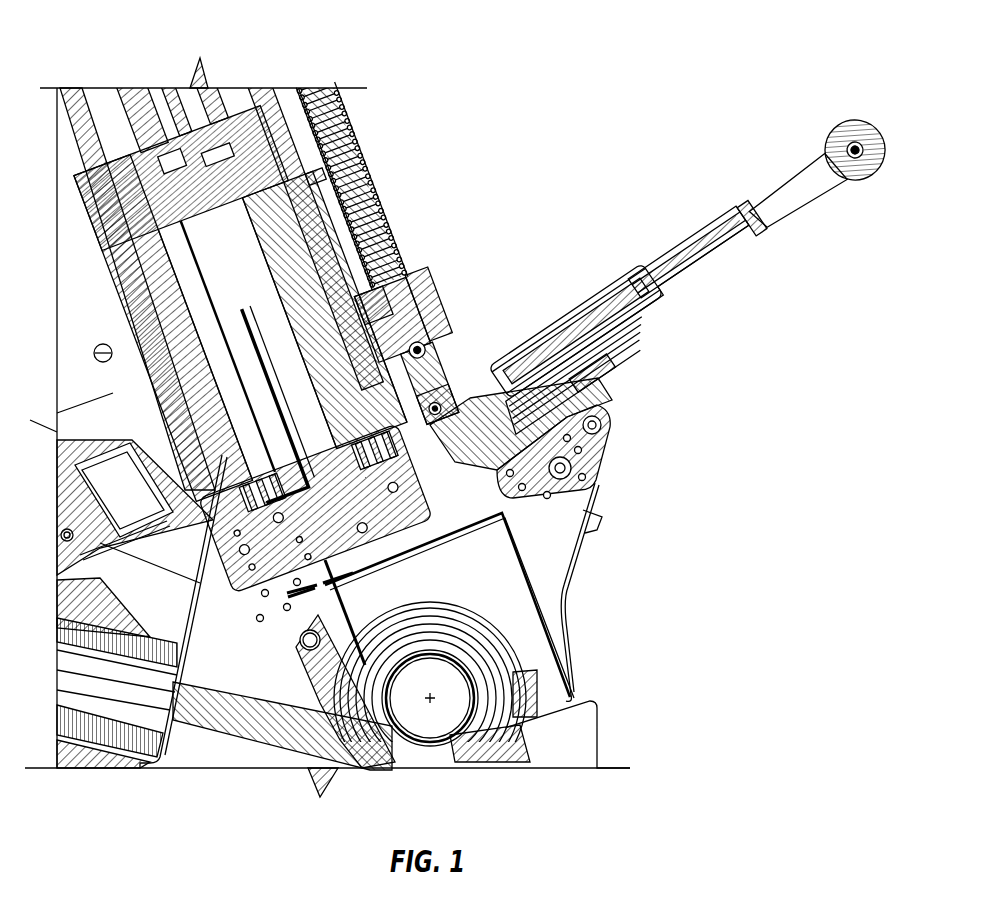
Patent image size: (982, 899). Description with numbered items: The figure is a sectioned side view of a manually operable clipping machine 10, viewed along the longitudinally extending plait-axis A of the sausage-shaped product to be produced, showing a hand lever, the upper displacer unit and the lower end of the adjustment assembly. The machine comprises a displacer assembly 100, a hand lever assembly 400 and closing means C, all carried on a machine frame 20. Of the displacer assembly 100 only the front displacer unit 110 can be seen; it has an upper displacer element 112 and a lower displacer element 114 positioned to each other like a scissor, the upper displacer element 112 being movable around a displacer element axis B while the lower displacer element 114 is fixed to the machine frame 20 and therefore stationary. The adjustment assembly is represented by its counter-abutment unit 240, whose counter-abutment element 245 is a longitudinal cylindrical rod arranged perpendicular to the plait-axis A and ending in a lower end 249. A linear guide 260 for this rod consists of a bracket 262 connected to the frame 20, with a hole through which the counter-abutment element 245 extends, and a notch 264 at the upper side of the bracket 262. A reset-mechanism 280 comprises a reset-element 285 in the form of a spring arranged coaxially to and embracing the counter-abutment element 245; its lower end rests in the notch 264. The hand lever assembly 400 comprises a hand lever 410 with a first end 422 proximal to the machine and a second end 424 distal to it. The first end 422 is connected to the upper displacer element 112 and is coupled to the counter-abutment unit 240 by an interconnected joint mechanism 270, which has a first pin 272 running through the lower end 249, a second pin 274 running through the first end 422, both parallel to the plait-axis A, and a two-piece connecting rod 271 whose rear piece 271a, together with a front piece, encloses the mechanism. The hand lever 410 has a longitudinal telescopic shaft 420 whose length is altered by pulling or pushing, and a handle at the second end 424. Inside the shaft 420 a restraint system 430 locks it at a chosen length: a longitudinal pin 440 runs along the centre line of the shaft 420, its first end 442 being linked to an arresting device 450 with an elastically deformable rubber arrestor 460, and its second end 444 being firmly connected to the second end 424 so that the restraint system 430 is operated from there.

The clipping machine 10 is at (753, 68).
The machine frame 20 is at (262, 93).
The displacer assembly 100 is at (658, 652).
The first displacer unit 110 is at (616, 550).
The upper displacer element 112 is at (555, 580).
The lower displacer element 114 is at (585, 745).
The counter-abutment unit 240 is at (414, 105).
The counter-abutment element 245 is at (353, 152).
The lower end 249 is at (391, 222).
The linear guide 260 is at (426, 272).
The bracket 262 is at (432, 306).
The notch 264 is at (372, 290).
The interconnected joint mechanism 270 is at (435, 347).
The connecting rod 271 is at (443, 392).
The rear piece 271a is at (427, 390).
The first pin 272 is at (380, 368).
The second pin 274 is at (423, 393).
The reset-mechanism 280 is at (394, 177).
The reset-element 285 is at (328, 92).
The hand lever assembly 400 is at (678, 355).
The hand lever 410 is at (748, 286).
The telescopic shaft 420 is at (692, 250).
The first end 422 is at (613, 407).
The second end 424 is at (815, 205).
The restraint system 430 is at (618, 308).
The longitudinal pin 440 is at (667, 290).
The first end 442 is at (592, 365).
The second end 444 is at (772, 232).
The arresting device 450 is at (556, 316).
The arrestor 460 is at (604, 450).
The plait-axis A is at (430, 698).
The displacer element axis B is at (447, 430).
The closing means C is at (248, 310).